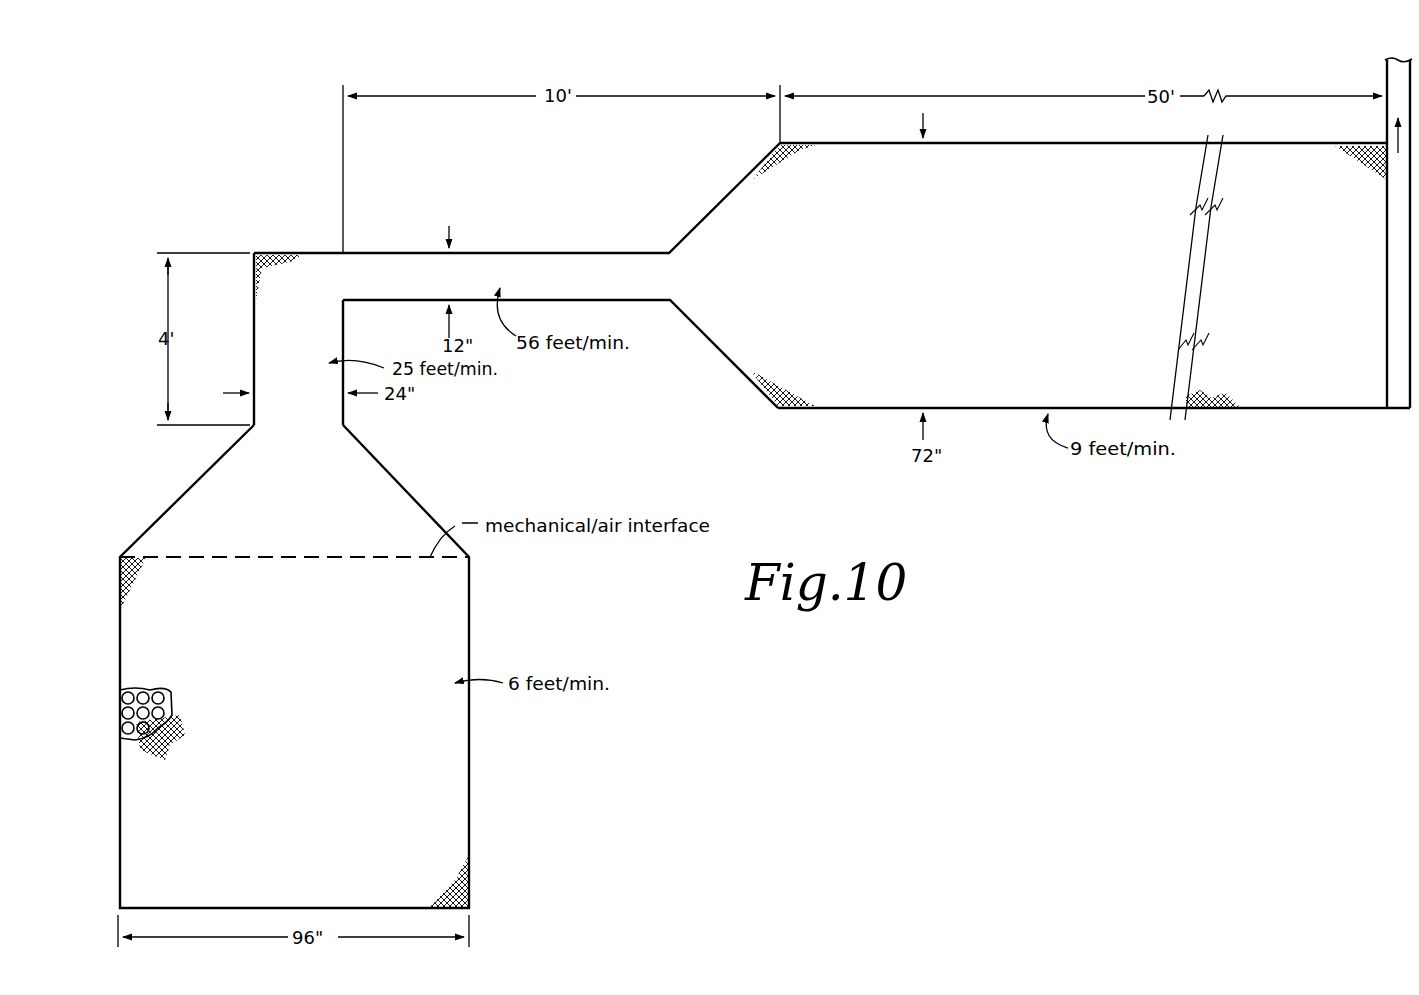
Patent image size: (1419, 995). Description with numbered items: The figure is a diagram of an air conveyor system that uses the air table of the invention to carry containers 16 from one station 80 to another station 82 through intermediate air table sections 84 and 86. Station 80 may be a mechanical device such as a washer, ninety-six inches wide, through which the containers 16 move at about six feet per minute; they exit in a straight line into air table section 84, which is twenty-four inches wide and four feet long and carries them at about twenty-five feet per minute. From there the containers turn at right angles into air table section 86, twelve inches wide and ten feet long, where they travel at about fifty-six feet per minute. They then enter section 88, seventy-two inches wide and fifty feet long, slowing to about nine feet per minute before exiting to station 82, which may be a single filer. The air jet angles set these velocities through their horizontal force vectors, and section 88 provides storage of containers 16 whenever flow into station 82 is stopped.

The containers 16 is at (124, 706).
The station 80 is at (451, 748).
The station 82 is at (1387, 76).
The air table section 84 is at (263, 326).
The air table section 86 is at (530, 258).
The section 88 is at (1048, 143).